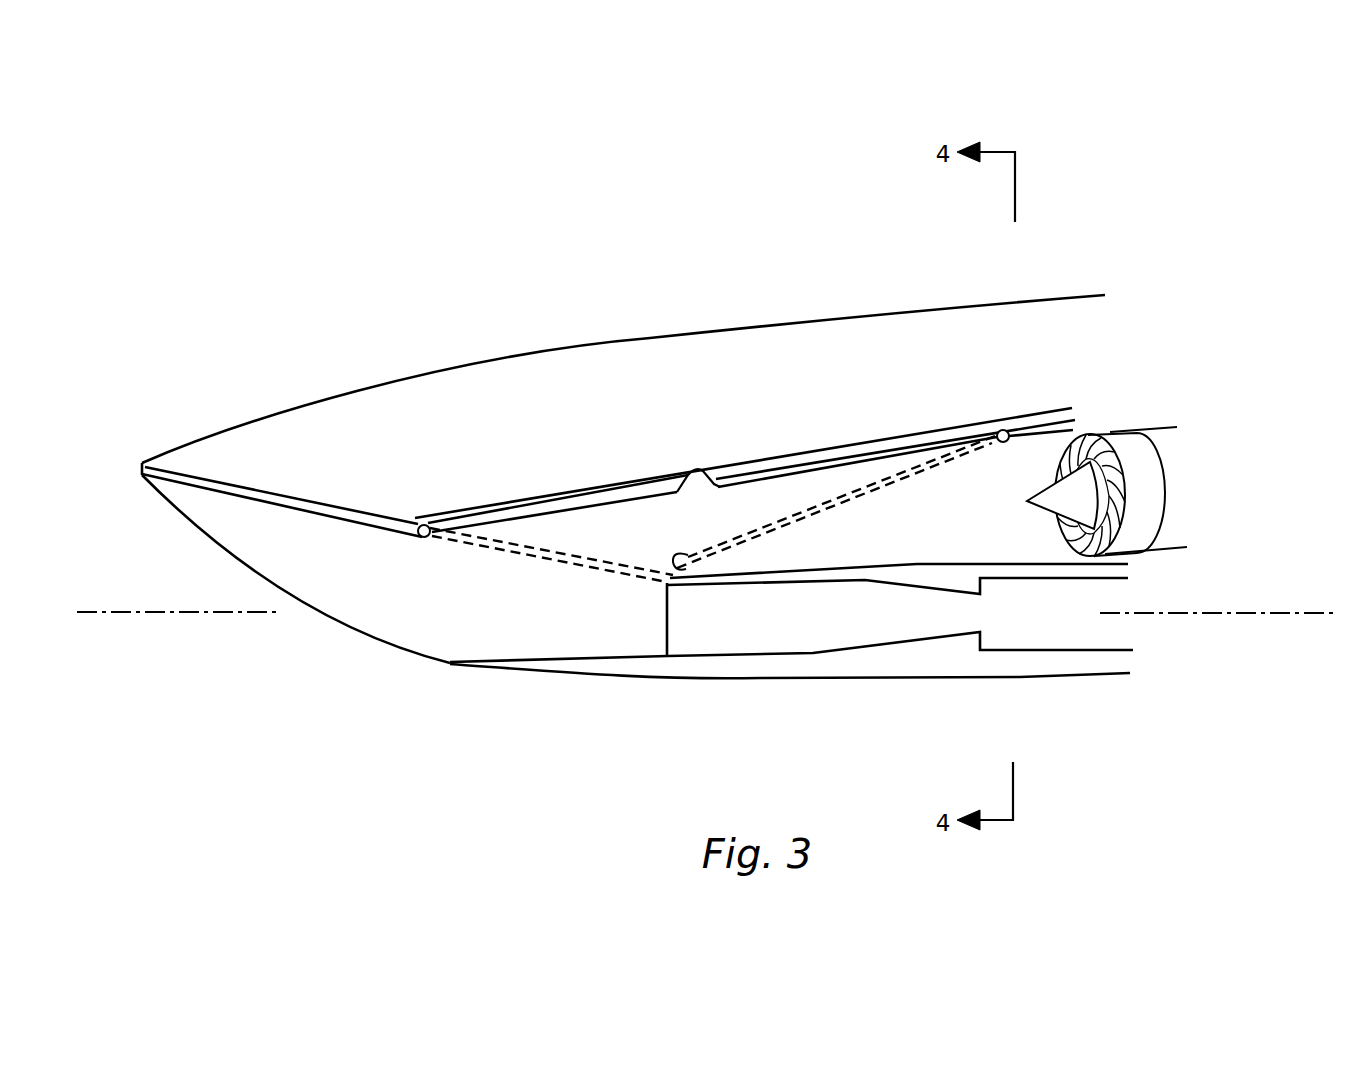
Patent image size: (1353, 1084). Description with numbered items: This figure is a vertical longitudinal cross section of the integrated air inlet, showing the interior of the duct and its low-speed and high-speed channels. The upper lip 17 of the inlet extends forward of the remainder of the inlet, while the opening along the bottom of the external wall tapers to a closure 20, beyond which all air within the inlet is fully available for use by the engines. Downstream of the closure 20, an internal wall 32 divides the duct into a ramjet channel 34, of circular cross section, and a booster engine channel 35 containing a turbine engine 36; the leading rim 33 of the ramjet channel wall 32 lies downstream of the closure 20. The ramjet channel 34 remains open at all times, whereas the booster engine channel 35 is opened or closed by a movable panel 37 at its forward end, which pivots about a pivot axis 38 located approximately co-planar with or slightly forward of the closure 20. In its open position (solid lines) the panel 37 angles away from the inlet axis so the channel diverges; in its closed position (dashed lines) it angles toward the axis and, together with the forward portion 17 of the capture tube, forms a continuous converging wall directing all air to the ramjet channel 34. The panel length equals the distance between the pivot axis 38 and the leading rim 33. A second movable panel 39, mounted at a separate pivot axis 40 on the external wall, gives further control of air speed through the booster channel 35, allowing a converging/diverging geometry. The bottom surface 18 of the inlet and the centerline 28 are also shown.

The upper lip 17 is at (180, 518).
The lower body surface 18 is at (530, 673).
The closure 20 is at (445, 667).
The engine centerline 28 is at (197, 613).
The internal wall 32 is at (777, 585).
The leading rim 33 is at (657, 583).
The ramjet channel 34 is at (867, 620).
The booster engine channel 35 is at (920, 537).
The turbine engine 36 is at (1113, 432).
The movable panel 37 is at (597, 504).
The pivot axis 38 is at (416, 517).
The second movable panel 39 is at (820, 462).
The pivot axis 40 is at (1000, 428).